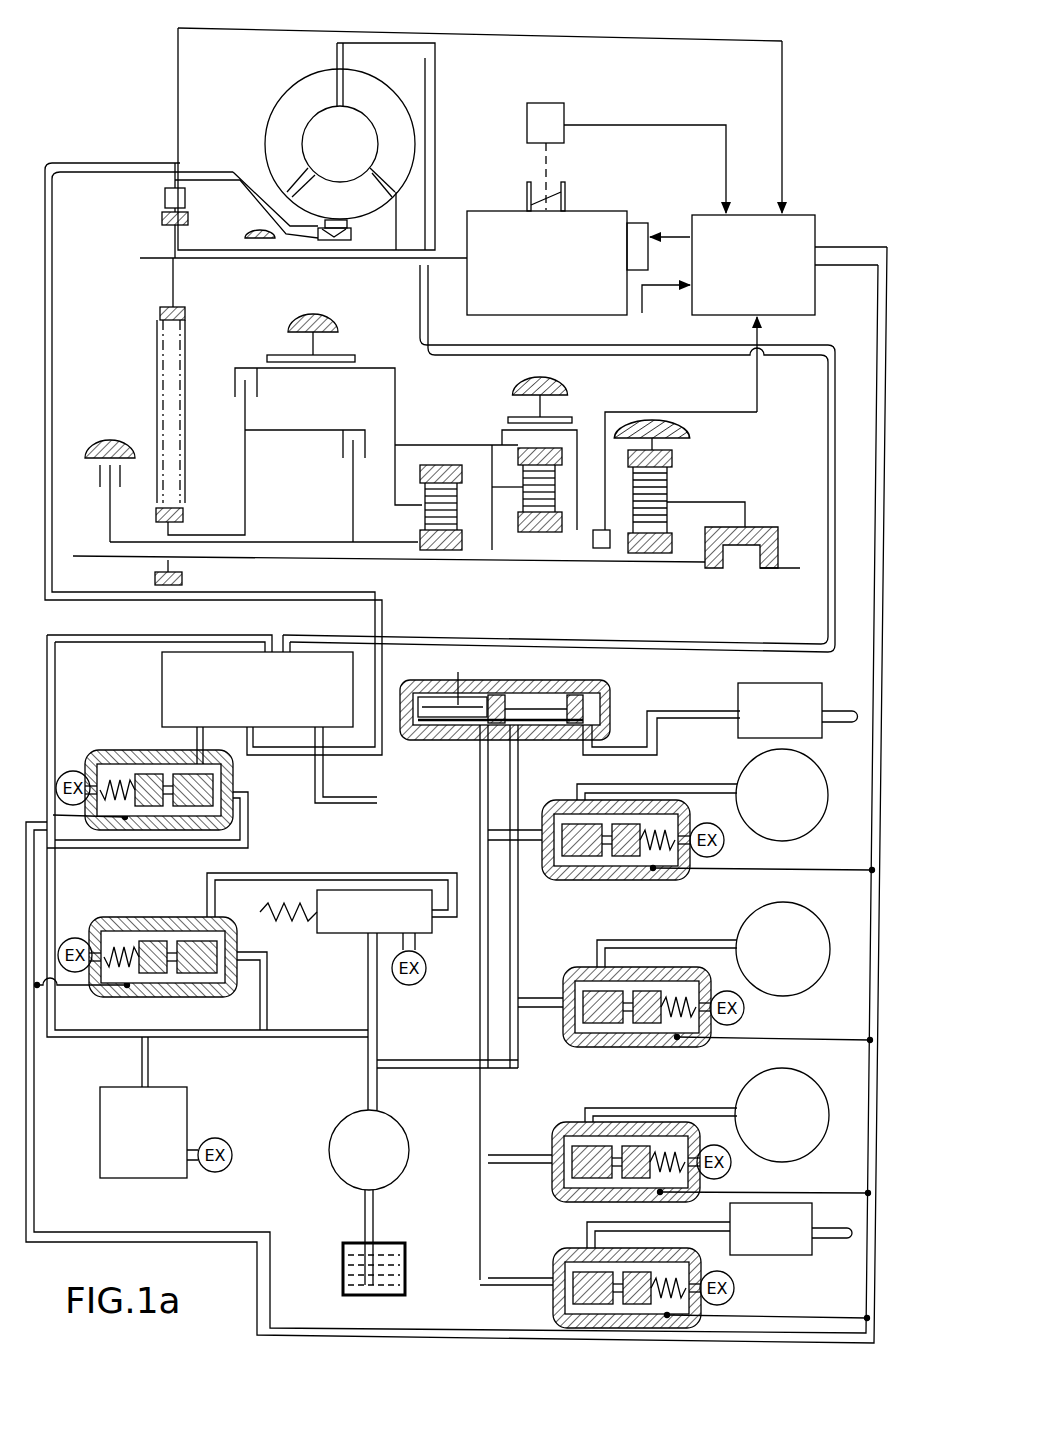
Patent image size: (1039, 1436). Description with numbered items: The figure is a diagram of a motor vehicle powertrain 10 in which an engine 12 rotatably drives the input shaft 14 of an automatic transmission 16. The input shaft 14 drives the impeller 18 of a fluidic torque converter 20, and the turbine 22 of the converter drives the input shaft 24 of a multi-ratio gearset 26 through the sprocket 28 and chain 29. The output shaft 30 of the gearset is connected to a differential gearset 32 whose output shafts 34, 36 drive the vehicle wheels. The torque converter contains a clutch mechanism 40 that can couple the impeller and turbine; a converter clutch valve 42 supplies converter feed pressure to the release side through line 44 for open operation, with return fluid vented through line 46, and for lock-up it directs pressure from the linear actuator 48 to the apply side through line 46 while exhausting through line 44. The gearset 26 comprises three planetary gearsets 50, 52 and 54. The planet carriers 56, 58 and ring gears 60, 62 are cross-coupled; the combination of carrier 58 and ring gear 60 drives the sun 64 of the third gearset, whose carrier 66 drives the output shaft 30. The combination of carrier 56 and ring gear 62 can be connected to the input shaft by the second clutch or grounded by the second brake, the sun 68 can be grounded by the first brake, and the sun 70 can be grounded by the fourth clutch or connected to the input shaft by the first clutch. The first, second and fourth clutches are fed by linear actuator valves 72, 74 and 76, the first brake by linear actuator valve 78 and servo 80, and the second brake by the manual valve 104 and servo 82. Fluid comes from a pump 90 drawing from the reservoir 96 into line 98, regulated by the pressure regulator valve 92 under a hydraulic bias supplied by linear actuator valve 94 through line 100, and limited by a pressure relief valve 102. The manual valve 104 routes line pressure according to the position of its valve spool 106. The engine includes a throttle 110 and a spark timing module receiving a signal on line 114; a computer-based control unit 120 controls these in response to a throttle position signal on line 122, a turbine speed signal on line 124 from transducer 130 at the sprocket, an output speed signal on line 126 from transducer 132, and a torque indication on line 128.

The motor vehicle powertrain 10 is at (165, 80).
The engine 12 is at (560, 315).
The input shaft 14 is at (340, 262).
The automatic transmission 16 is at (840, 455).
The impeller 18 is at (300, 100).
The fluidic torque converter 20 is at (325, 62).
The turbine 22 is at (393, 100).
The input shaft 24 is at (220, 535).
The multi-ratio gearset 26 is at (340, 312).
The sprocket 28 is at (160, 220).
The chain 29 is at (155, 410).
The output shaft 30 is at (740, 500).
The differential gearset 32 is at (760, 527).
The output shaft 34 is at (645, 565).
The output shaft 36 is at (795, 570).
The clutch mechanism 40 is at (427, 218).
The converter clutch valve 42 is at (162, 713).
The line 44 is at (527, 349).
The line 46 is at (138, 162).
The linear actuator 48 is at (233, 760).
The planetary gearset 50 is at (415, 562).
The planetary gearset 52 is at (507, 552).
The planetary gearset 54 is at (676, 527).
The planet carrier 56 is at (415, 520).
The planet carrier 58 is at (510, 487).
The ring gear 60 is at (430, 465).
The ring gear 62 is at (520, 450).
The sun 64 is at (635, 555).
The carrier 66 is at (682, 500).
The sun 68 is at (552, 532).
The sun 70 is at (447, 550).
The linear actuator valve 72 is at (572, 985).
The linear actuator valve 74 is at (550, 815).
The linear actuator valve 76 is at (562, 1140).
The linear actuator valve 78 is at (558, 1236).
The fluid operated servo 80 is at (802, 1257).
The fluid operated servo 82 is at (752, 692).
The pump 90 is at (325, 1165).
The pressure regulator valve 92 is at (345, 935).
The linear actuator valve 94 is at (155, 918).
The reservoir 96 is at (343, 1252).
The line 98 is at (380, 1065).
The line 100 is at (348, 875).
The pressure relief valve 102 is at (100, 1162).
The manual valve 104 is at (457, 742).
The valve spool 106 is at (594, 713).
The throttle 110 is at (567, 203).
The line 114 is at (673, 237).
The control unit 120 is at (815, 230).
The line 122 is at (680, 123).
The line 124 is at (785, 125).
The line 126 is at (640, 412).
The line 128 is at (668, 318).
The turbine speed transducer 130 is at (165, 198).
The output speed transducer 132 is at (600, 550).